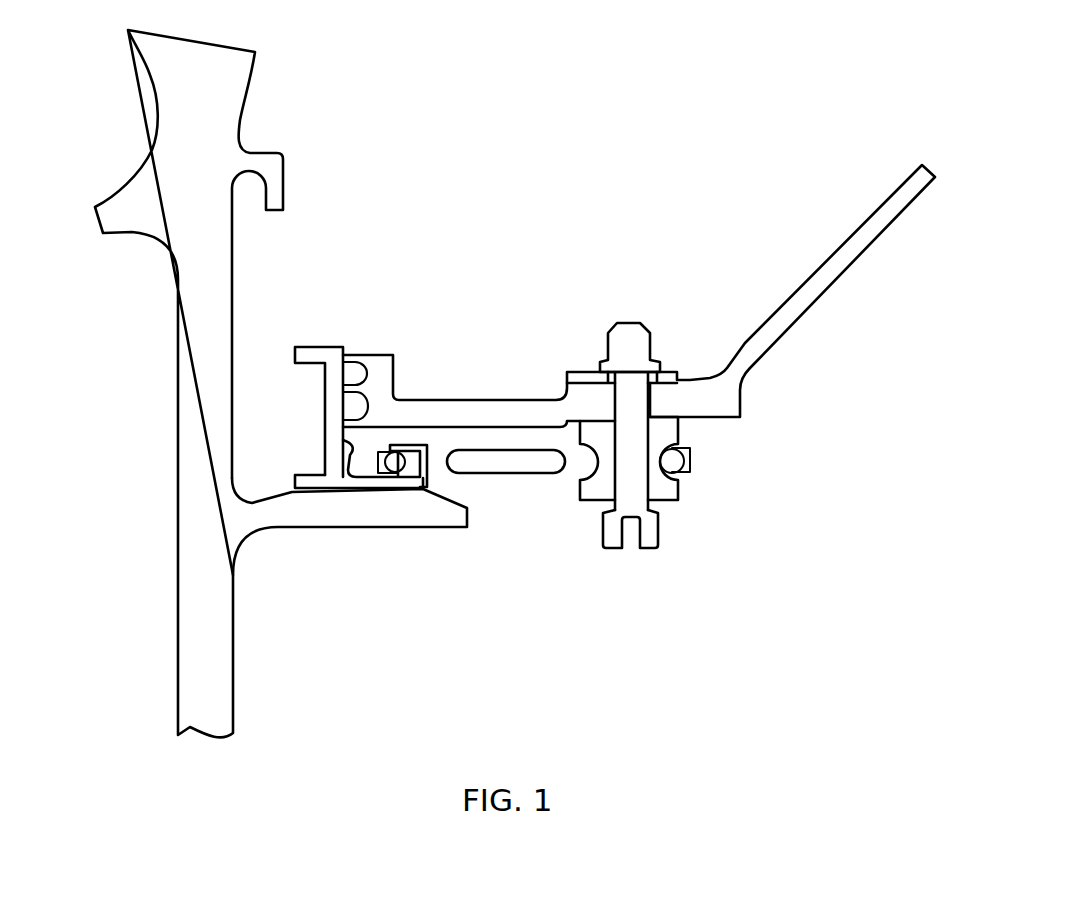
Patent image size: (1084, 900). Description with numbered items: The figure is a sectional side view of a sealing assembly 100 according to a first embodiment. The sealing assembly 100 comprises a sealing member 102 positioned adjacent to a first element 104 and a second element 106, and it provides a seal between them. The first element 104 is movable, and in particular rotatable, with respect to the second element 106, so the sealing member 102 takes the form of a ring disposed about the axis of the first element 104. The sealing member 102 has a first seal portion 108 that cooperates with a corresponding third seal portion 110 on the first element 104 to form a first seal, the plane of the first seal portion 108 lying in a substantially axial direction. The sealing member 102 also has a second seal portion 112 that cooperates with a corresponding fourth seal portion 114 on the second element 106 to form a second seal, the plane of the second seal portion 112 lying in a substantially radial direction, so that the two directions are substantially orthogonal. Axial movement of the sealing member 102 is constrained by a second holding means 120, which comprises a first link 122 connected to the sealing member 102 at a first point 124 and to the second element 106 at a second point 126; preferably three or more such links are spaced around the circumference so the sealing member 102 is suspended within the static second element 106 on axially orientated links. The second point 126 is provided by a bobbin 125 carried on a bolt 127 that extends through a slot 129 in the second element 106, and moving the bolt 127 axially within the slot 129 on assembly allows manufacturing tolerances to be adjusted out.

The sealing assembly 100 is at (508, 636).
The sealing member 102 is at (313, 352).
The first element 104 is at (188, 450).
The second element 106 is at (480, 410).
The first seal portion 108 is at (320, 477).
The third seal portion 110 is at (333, 480).
The second seal portion 112 is at (338, 413).
The fourth seal portion 114 is at (353, 377).
The second holding means 120 is at (548, 485).
The first link 122 is at (497, 462).
The first point 124 is at (405, 466).
The bobbin 125 is at (670, 488).
The second point 126 is at (667, 460).
The bolt 127 is at (630, 332).
The slot 129 is at (650, 393).